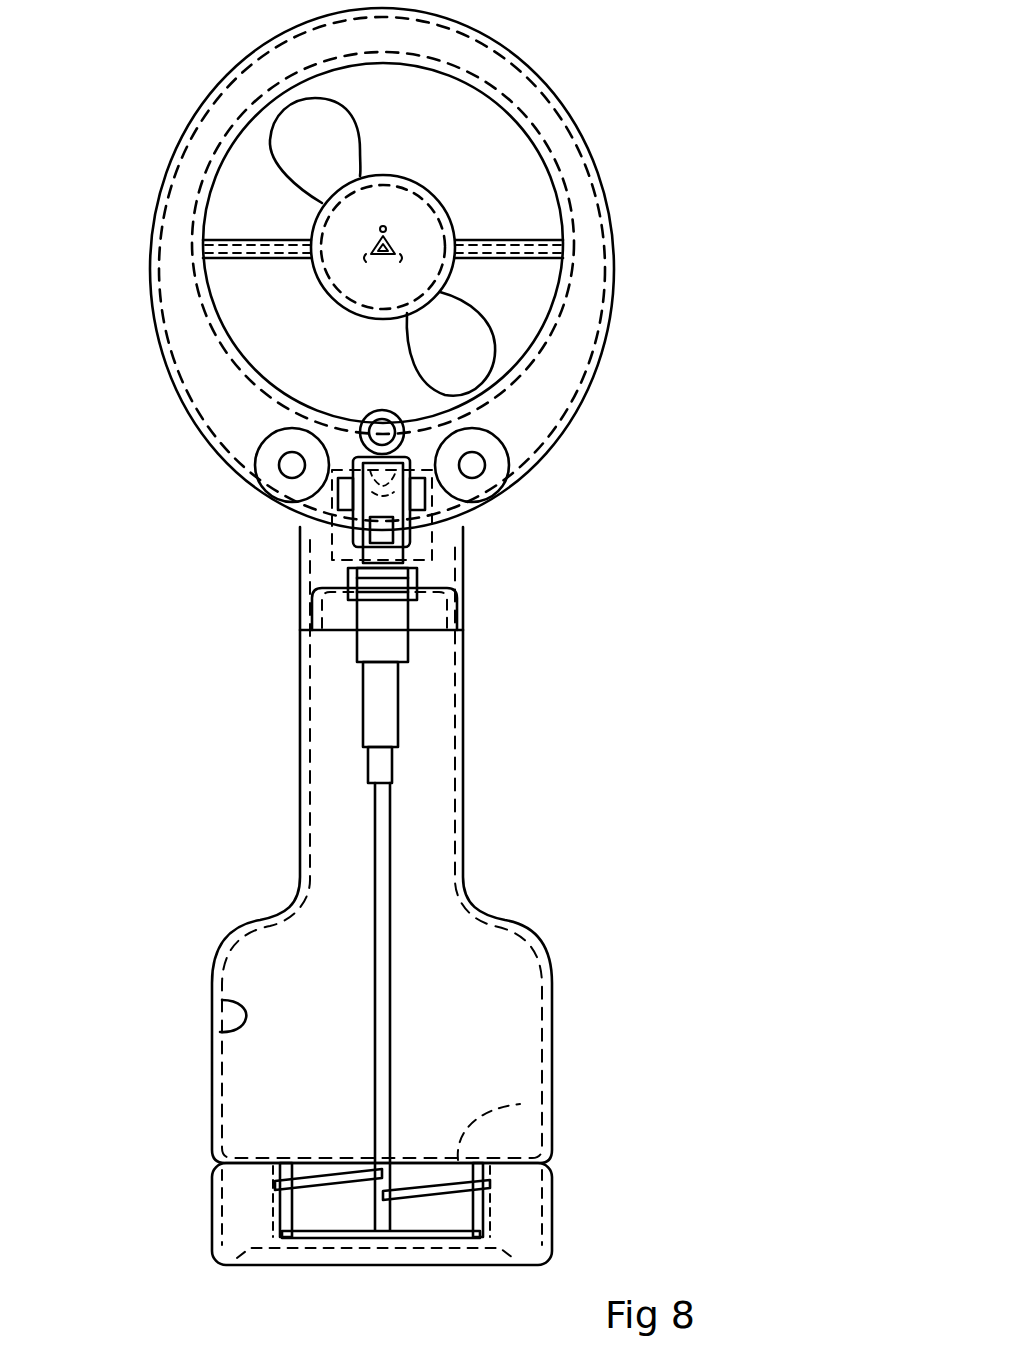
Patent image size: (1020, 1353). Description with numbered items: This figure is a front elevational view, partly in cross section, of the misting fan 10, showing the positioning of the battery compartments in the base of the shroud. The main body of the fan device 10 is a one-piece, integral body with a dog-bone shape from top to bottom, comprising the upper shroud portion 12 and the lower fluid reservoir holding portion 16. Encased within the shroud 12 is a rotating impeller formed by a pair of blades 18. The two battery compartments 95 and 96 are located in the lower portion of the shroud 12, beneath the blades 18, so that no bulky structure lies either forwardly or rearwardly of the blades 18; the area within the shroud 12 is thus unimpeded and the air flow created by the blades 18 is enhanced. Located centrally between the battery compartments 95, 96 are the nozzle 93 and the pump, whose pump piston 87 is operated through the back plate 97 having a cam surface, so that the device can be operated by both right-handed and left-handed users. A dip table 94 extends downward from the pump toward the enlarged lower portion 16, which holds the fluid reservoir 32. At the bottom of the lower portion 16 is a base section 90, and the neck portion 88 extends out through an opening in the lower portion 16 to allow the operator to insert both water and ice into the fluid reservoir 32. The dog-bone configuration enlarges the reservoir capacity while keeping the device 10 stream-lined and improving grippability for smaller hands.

The misting fan 10 is at (558, 704).
The upper shroud portion 12 is at (602, 152).
The lower fluid reservoir holding portion 16 is at (553, 998).
The blades 18 is at (335, 137).
The fluid reservoir 32 is at (220, 1033).
The pump piston 87 is at (360, 556).
The neck portion 88 is at (298, 1236).
The base 90 is at (553, 1207).
The nozzle 93 is at (403, 427).
The dip table 94 is at (392, 922).
The battery compartment 95 is at (270, 488).
The battery compartment 96 is at (255, 260).
The back plate 97 is at (517, 263).